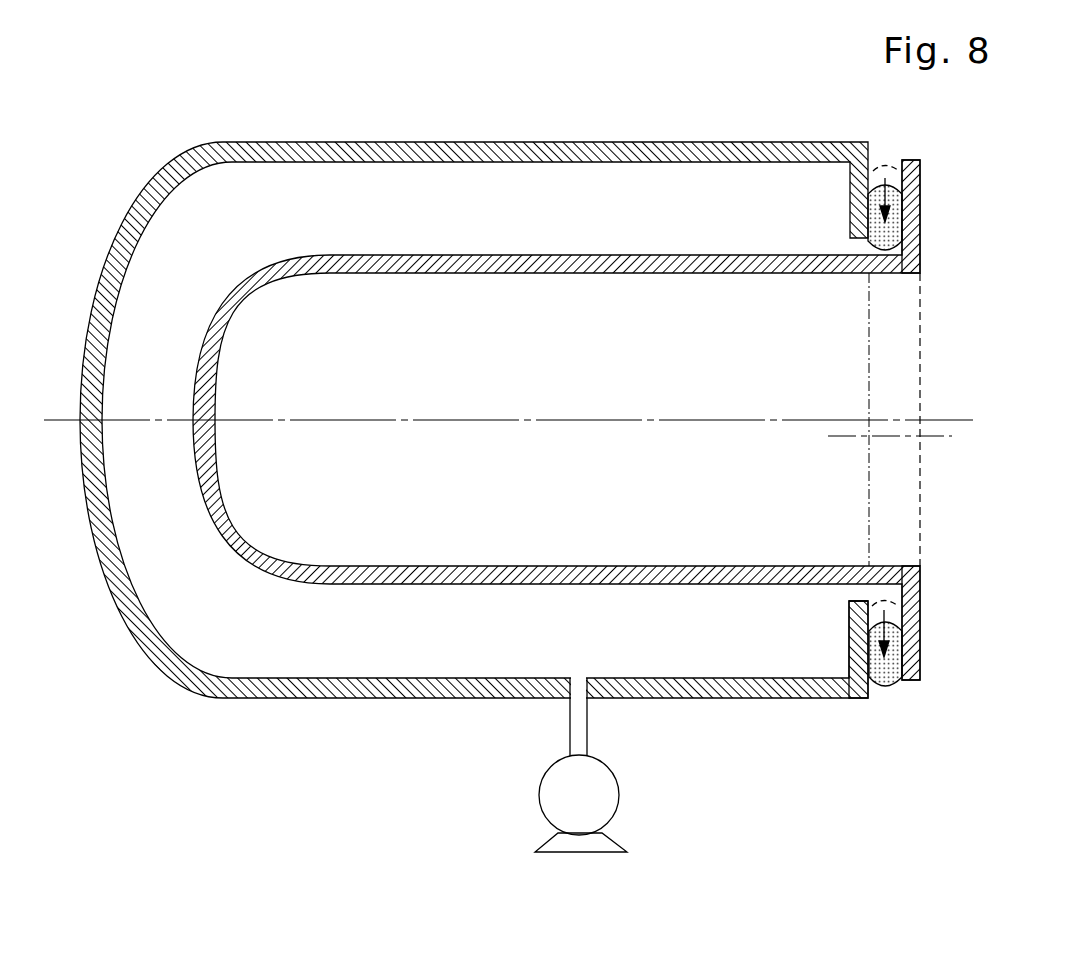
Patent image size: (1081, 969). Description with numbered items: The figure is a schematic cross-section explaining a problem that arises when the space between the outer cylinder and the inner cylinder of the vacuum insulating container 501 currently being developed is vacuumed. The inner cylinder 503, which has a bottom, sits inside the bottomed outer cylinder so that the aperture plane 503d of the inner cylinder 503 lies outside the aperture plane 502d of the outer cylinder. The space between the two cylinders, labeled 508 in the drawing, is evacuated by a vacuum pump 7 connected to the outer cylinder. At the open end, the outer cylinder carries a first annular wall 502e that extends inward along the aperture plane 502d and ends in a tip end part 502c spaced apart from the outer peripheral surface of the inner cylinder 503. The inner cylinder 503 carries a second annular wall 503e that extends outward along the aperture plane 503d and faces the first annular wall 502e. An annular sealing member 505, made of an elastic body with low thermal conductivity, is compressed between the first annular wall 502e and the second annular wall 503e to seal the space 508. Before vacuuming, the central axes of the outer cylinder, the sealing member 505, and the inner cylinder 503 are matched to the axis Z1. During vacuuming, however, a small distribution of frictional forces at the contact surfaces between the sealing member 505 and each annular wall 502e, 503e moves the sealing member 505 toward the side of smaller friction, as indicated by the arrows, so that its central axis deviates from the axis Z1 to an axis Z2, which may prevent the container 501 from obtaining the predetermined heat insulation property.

The vacuum insulating container 501 is at (547, 83).
The inner cylinder 503 is at (532, 570).
The annular flow path 508 is at (607, 612).
The tip end part 502c is at (862, 590).
The aperture plane of the outer cylinder 502d is at (869, 307).
The first annular wall 502e is at (849, 644).
The aperture plane of the inner cylinder 503d is at (920, 522).
The second annular wall 503e is at (920, 633).
The sealing member 505 is at (893, 678).
The vacuum pump 7 is at (545, 818).
The axis Z1 is at (965, 420).
The axis Z2 is at (943, 438).